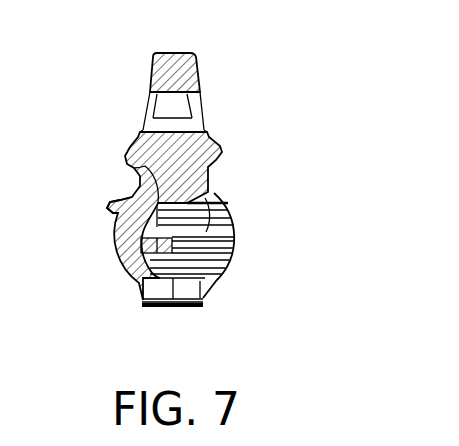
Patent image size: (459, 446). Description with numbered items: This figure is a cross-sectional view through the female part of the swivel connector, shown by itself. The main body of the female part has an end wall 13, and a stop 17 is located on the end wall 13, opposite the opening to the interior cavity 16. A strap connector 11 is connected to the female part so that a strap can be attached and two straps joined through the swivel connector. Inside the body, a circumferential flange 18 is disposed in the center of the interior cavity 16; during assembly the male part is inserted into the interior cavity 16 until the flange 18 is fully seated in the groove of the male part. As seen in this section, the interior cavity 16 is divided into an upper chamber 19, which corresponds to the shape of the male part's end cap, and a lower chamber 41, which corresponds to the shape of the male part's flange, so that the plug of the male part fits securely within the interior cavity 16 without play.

The strap connector 11 is at (192, 73).
The end wall 13 is at (118, 243).
The interior cavity 16 is at (212, 199).
The stop 17 is at (112, 201).
The circumferential flange 18 is at (117, 250).
The upper chamber 19 is at (140, 168).
The lower chamber 41 is at (133, 283).